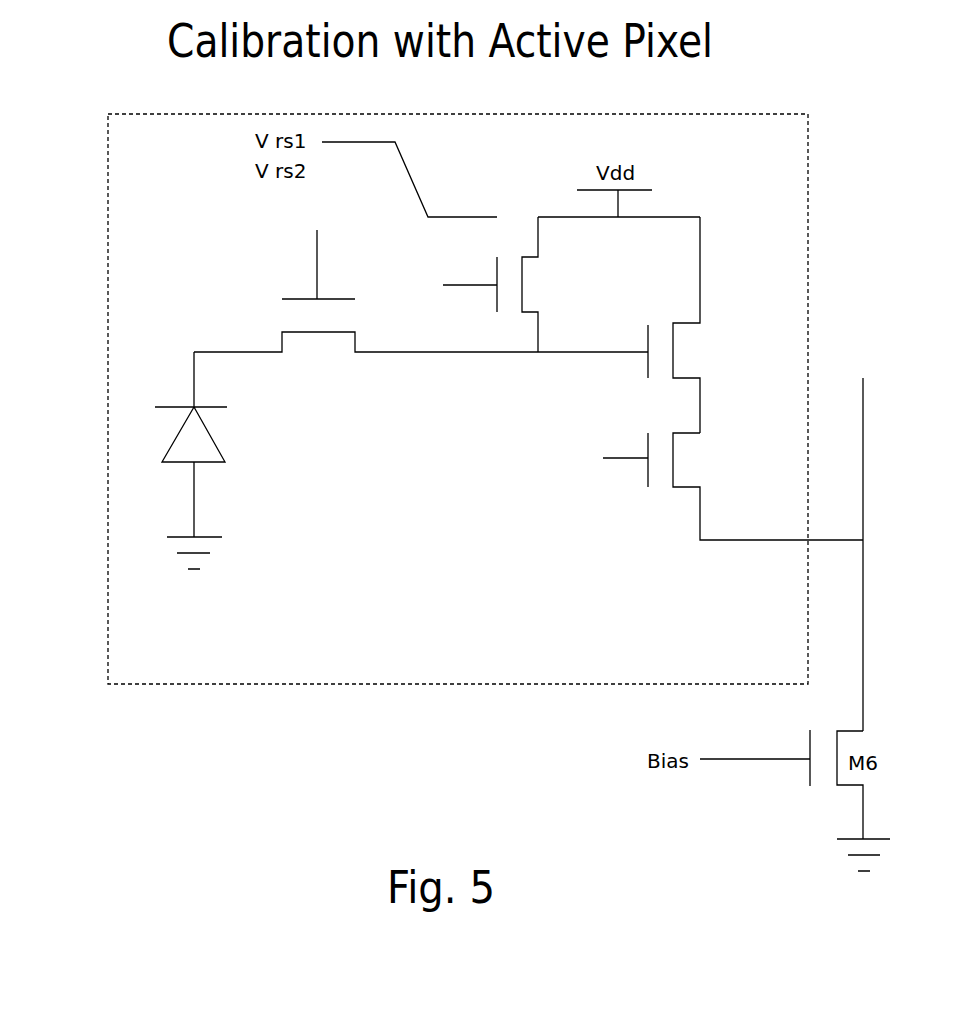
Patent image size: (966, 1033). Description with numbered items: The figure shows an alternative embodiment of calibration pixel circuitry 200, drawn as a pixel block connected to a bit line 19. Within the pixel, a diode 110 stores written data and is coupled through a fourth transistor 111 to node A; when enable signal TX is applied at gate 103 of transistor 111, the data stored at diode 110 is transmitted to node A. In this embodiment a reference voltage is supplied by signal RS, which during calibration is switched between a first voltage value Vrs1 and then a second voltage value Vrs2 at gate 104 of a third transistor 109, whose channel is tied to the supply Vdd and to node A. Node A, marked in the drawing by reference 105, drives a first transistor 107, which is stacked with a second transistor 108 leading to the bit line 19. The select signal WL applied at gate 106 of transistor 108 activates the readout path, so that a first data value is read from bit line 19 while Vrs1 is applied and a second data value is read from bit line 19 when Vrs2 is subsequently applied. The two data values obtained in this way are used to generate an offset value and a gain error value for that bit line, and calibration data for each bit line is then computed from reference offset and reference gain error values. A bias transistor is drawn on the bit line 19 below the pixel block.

The bit line 19 is at (863, 465).
The gate 103 is at (317, 276).
The gate 104 is at (470, 285).
The node A 105 is at (539, 352).
The gate 106 is at (625, 458).
The transistor M1 107 is at (717, 343).
The transistor 108 is at (719, 457).
The transistor 109 is at (563, 281).
The diode 110 is at (215, 438).
The transistor 111 is at (325, 357).
The pixel circuitry 200 is at (808, 193).